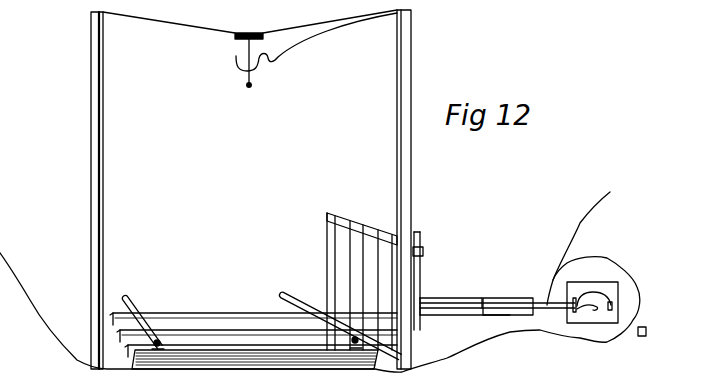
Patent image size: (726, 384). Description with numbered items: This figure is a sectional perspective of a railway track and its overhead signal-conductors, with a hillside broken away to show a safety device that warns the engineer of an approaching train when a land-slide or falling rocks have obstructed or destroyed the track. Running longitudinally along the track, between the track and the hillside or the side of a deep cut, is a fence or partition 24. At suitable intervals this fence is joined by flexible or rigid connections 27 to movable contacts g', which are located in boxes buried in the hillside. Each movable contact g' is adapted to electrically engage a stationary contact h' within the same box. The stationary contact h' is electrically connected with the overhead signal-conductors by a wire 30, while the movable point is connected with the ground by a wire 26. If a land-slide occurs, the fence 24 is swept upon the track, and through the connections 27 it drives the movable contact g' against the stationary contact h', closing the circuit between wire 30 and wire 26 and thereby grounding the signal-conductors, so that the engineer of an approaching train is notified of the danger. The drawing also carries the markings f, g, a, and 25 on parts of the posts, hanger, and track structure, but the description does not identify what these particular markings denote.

The hanger block f is at (256, 32).
The hook spring g is at (316, 50).
The wire 30 is at (397, 110).
The fence or partition 24 is at (423, 265).
The rails a is at (253, 341).
The latch bar 25 is at (438, 311).
The flexible or rigid connections 27 is at (470, 304).
The movable contact g' is at (621, 287).
The stationary contact h' is at (589, 287).
The wire 26 is at (641, 326).